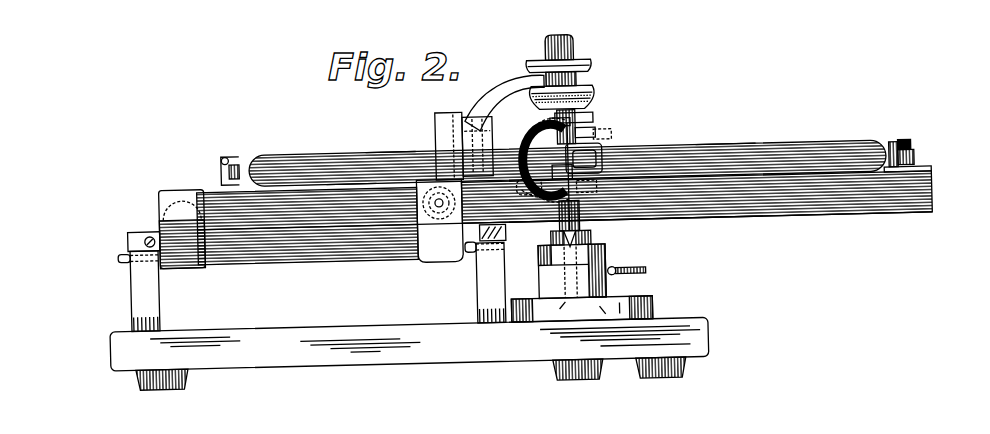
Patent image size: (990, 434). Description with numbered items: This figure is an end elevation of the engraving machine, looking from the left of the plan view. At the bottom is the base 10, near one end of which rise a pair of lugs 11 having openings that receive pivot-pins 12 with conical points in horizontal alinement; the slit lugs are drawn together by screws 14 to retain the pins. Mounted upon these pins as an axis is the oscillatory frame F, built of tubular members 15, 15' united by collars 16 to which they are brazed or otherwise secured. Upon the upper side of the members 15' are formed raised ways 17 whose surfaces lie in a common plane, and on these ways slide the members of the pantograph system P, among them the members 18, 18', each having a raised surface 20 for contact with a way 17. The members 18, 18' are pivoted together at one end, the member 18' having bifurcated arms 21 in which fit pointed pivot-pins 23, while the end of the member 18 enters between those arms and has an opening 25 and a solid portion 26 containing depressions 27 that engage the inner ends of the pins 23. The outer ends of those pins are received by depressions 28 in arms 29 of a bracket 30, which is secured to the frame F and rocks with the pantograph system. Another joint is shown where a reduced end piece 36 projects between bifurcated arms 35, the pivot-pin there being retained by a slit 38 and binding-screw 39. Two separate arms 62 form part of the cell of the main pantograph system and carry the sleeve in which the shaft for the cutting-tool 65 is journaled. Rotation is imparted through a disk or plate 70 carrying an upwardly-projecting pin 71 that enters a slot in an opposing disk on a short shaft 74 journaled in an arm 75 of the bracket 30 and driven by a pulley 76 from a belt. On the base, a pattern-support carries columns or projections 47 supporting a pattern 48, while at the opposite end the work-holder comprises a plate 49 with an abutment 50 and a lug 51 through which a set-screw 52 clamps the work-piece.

The base 10 is at (409, 354).
The lugs 11 is at (135, 292).
The pivot-pins 12 is at (122, 261).
The screws 14 is at (150, 238).
The tubular members 15 is at (565, 227).
The tubular members 15' is at (565, 244).
The collars 16 is at (186, 255).
The raised ways 17 is at (345, 183).
The pantograph member 18 is at (391, 138).
The pantograph member 18' is at (726, 133).
The raised surface 20 is at (302, 185).
The bifurcated arms 21 is at (583, 125).
The pivot-pins 23 is at (592, 136).
The opening 25 is at (584, 158).
The solid portion 26 is at (561, 171).
The depressions 27 is at (573, 161).
The depressions 28 is at (553, 123).
The arms 29 is at (540, 161).
The bracket 30 is at (466, 146).
The arms 35 is at (260, 162).
The reduced end piece 36 is at (228, 172).
The slit 38 is at (912, 143).
The binding-screw 39 is at (231, 160).
The columns or projections 47 is at (540, 262).
The pattern 48 is at (612, 253).
The plate 49 is at (652, 307).
The abutment 50 is at (540, 290).
The lug 51 is at (608, 291).
The set-screw 52 is at (645, 271).
The arms 62 is at (605, 121).
The cutting-tool 65 is at (572, 271).
The disk or plate 70 is at (600, 105).
The pin 71 is at (600, 98).
The short shaft 74 is at (565, 43).
The arm 75 is at (515, 103).
The pulley 76 is at (590, 70).
The pantograph system P is at (664, 134).
The oscillatory frame F is at (743, 225).